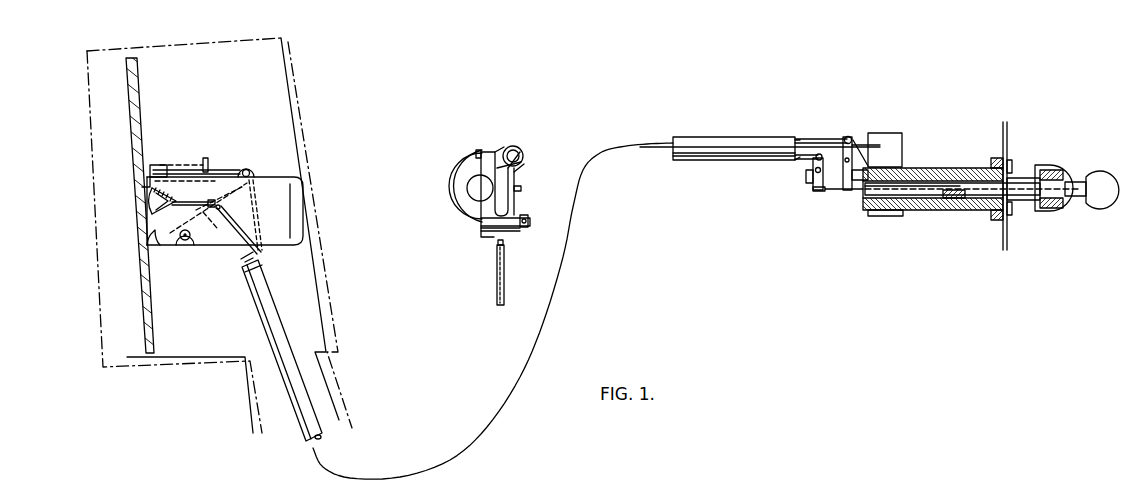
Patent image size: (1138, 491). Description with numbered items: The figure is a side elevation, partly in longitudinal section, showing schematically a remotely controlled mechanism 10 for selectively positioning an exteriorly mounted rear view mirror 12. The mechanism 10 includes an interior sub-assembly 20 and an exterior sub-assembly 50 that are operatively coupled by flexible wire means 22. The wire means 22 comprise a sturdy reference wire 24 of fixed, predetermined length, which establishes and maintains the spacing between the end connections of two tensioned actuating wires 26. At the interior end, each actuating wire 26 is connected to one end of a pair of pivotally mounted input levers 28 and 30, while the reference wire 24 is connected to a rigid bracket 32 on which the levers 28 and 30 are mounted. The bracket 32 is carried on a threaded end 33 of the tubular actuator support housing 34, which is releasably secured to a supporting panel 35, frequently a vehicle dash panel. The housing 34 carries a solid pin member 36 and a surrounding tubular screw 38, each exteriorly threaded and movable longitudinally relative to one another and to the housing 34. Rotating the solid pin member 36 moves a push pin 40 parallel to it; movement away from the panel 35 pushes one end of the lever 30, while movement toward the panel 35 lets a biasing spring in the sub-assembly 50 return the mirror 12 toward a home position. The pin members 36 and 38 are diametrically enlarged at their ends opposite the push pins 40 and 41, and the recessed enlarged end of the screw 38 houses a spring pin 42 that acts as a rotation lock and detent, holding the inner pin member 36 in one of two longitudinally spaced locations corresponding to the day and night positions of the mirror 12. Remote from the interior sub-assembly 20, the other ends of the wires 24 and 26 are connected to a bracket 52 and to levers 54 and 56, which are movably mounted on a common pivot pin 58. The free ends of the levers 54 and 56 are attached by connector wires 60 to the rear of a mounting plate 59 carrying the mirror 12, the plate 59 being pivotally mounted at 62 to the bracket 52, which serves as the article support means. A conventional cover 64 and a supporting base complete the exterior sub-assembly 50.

The mechanism 10 is at (645, 92).
The rear view mirror 12 is at (135, 327).
The interior sub-assembly 20 is at (862, 210).
The flexible wire means 22 is at (497, 305).
The reference wire 24 is at (249, 240).
The actuating wires 26 is at (249, 250).
The input lever 28 is at (846, 191).
The input lever 30 is at (814, 188).
The rigid bracket 32 is at (894, 152).
The threaded end 33 is at (906, 214).
The actuator support housing 34 is at (927, 212).
The supporting panel 35 is at (1007, 238).
The solid pin member 36 is at (1077, 184).
The tubular screw 38 is at (1017, 180).
The push pin 40 is at (886, 208).
The push pin 41 is at (943, 181).
The spring pin 42 is at (1053, 170).
The exterior sub-assembly 50 is at (283, 154).
The bracket 52 is at (206, 246).
The lever 54 is at (251, 171).
The lever 56 is at (205, 233).
The pivot pin 58 is at (183, 241).
The mounting plate 59 is at (148, 321).
The connector wires 60 is at (192, 200).
The pivot 62 is at (150, 202).
The cover 64 is at (328, 327).